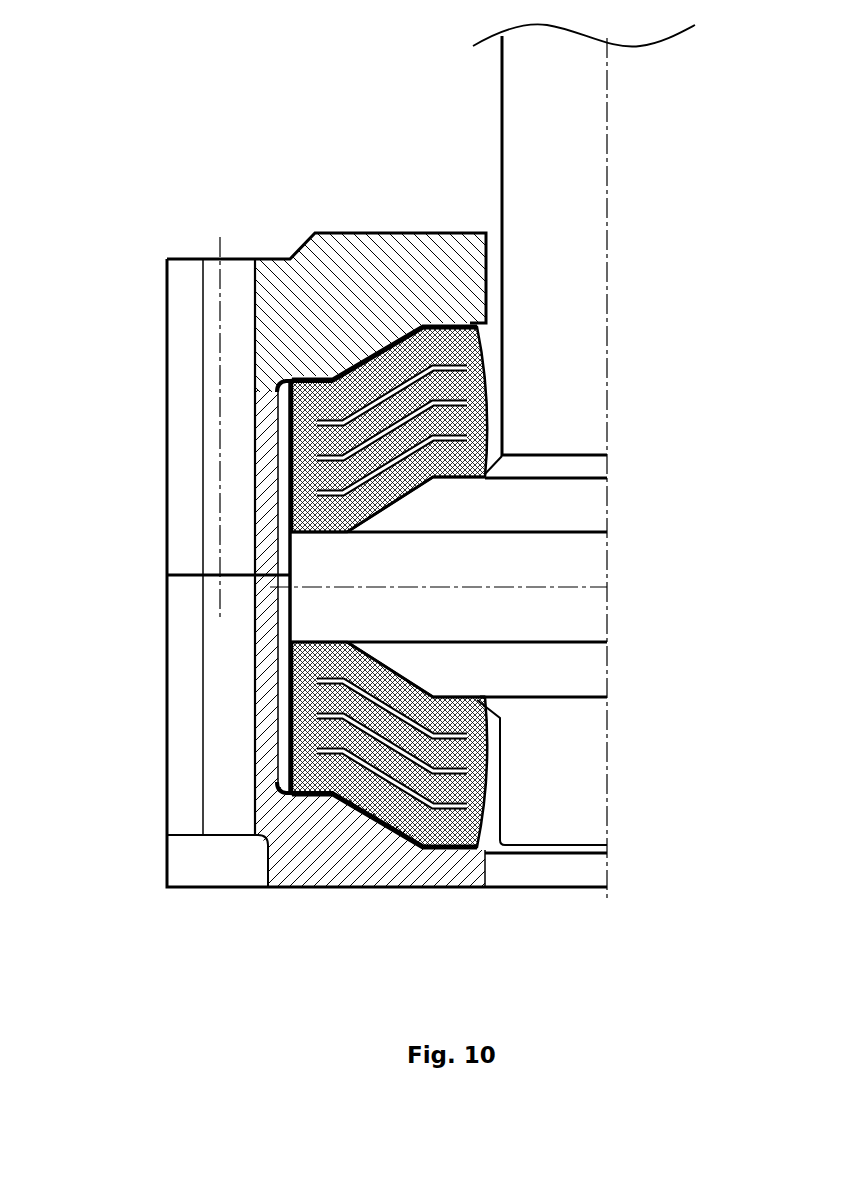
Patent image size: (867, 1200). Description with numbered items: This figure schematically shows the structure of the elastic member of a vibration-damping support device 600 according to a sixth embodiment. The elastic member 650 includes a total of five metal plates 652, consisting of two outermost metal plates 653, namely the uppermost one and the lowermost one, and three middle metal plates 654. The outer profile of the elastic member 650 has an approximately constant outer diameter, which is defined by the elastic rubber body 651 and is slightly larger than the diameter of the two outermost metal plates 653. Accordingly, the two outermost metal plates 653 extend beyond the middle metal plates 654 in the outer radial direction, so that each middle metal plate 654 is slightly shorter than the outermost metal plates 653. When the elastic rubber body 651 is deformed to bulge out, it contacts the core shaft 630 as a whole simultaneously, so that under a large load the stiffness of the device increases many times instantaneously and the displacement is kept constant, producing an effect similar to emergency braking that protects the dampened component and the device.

The vibration-damping support device 600 is at (786, 449).
The core shaft 630 is at (563, 397).
The elastic member 650 is at (480, 340).
The elastic rubber body 651 is at (428, 330).
The metal plates 652 is at (345, 368).
The outermost metal plates 653 is at (300, 380).
The middle metal plates 654 is at (289, 398).